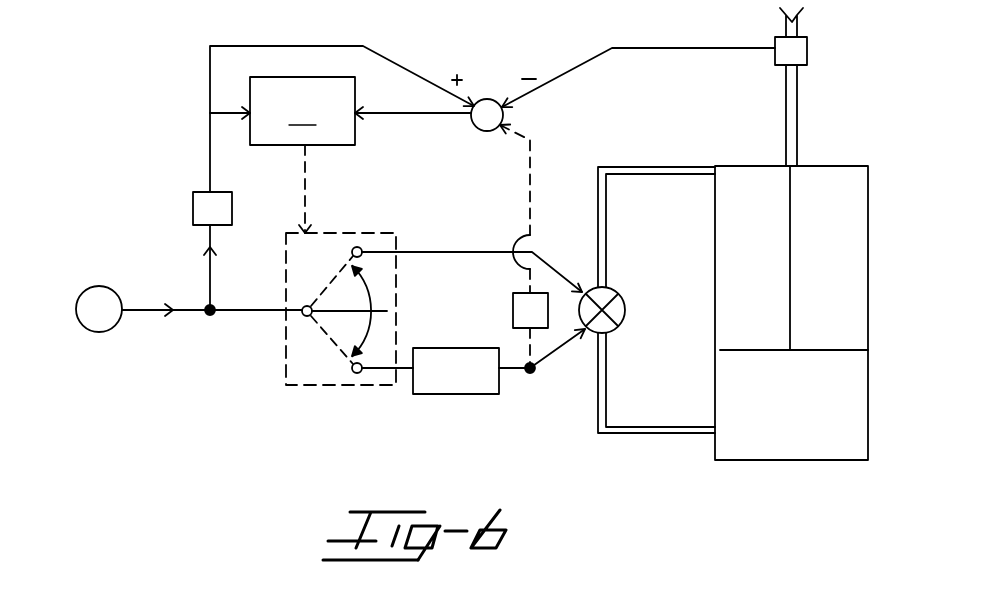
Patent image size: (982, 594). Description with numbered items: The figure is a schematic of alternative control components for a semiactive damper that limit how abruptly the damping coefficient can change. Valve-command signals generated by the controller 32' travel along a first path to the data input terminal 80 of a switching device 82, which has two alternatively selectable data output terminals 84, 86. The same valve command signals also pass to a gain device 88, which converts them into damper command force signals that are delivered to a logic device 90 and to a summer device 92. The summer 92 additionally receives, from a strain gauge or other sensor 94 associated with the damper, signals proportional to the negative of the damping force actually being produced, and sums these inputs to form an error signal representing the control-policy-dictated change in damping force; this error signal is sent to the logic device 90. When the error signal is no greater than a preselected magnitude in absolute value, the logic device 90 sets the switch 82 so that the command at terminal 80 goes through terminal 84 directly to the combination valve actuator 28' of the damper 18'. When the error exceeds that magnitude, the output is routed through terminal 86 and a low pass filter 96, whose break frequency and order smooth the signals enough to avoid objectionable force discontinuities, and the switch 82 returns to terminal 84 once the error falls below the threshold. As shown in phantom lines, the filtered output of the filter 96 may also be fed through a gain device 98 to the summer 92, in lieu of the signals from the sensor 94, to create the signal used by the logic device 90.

The damper 18' is at (733, 284).
The combination valve actuator 28' is at (633, 310).
The controller 32' is at (98, 324).
The data input terminal 80 is at (302, 316).
The switching device 82 is at (335, 233).
The data output terminal 84 is at (362, 250).
The data output terminal 86 is at (362, 374).
The gain device 88 is at (193, 210).
The logic device 90 is at (302, 111).
The summer device 92 is at (478, 129).
The sensor 94 is at (807, 52).
The low pass filter 96 is at (475, 394).
The gain device 98 is at (513, 312).